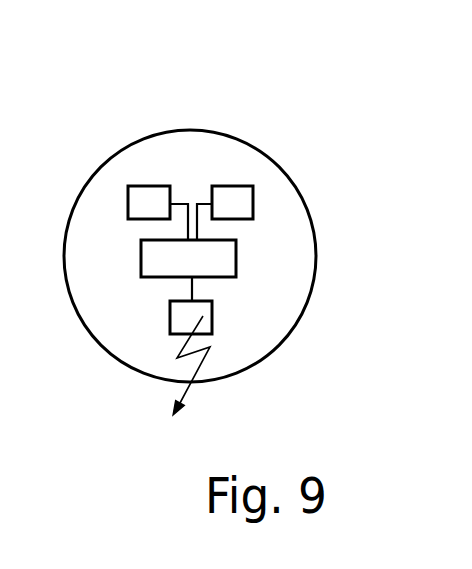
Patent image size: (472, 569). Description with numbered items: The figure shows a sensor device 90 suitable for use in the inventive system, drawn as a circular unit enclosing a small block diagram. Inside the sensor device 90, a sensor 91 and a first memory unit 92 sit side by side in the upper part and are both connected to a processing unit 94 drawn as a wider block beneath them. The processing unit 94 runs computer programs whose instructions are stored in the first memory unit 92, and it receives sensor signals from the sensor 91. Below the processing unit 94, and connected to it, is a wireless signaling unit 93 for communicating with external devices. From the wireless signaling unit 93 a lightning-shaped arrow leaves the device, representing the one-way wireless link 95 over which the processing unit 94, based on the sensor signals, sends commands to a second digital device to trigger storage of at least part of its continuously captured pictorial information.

The sensor device 90 is at (193, 110).
The sensor 91 is at (139, 193).
The first memory unit 92 is at (247, 188).
The wireless signaling unit 93 is at (170, 325).
The processing unit 94 is at (227, 261).
The one-way wireless link 95 is at (184, 401).